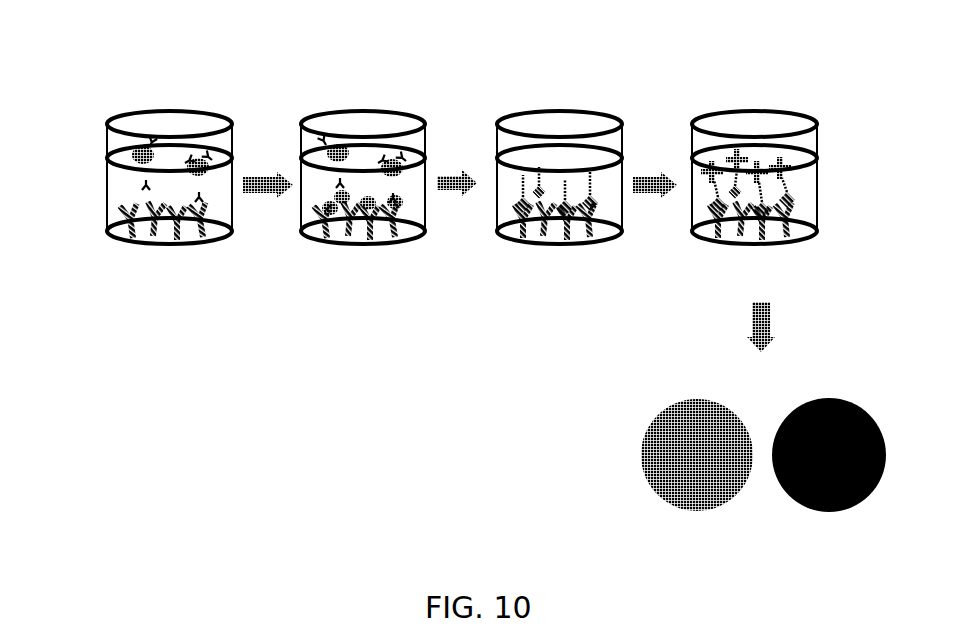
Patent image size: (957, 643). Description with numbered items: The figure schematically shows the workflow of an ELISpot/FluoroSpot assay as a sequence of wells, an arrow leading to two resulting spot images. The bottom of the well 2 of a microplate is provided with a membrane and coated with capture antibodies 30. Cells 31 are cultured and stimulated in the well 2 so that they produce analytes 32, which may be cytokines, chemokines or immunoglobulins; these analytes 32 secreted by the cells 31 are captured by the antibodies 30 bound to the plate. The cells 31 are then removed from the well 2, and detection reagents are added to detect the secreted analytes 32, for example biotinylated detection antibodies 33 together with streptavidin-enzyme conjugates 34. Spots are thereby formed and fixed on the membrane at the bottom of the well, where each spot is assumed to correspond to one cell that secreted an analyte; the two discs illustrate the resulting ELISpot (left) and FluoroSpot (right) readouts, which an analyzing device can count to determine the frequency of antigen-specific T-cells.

The well 2 is at (228, 142).
The antibodies 30 is at (125, 216).
The cells 31 is at (130, 142).
The analytes 32 is at (398, 202).
The biotinylated detection antibodies 33 is at (596, 182).
The streptavidin-enzyme conjugates 34 is at (785, 160).